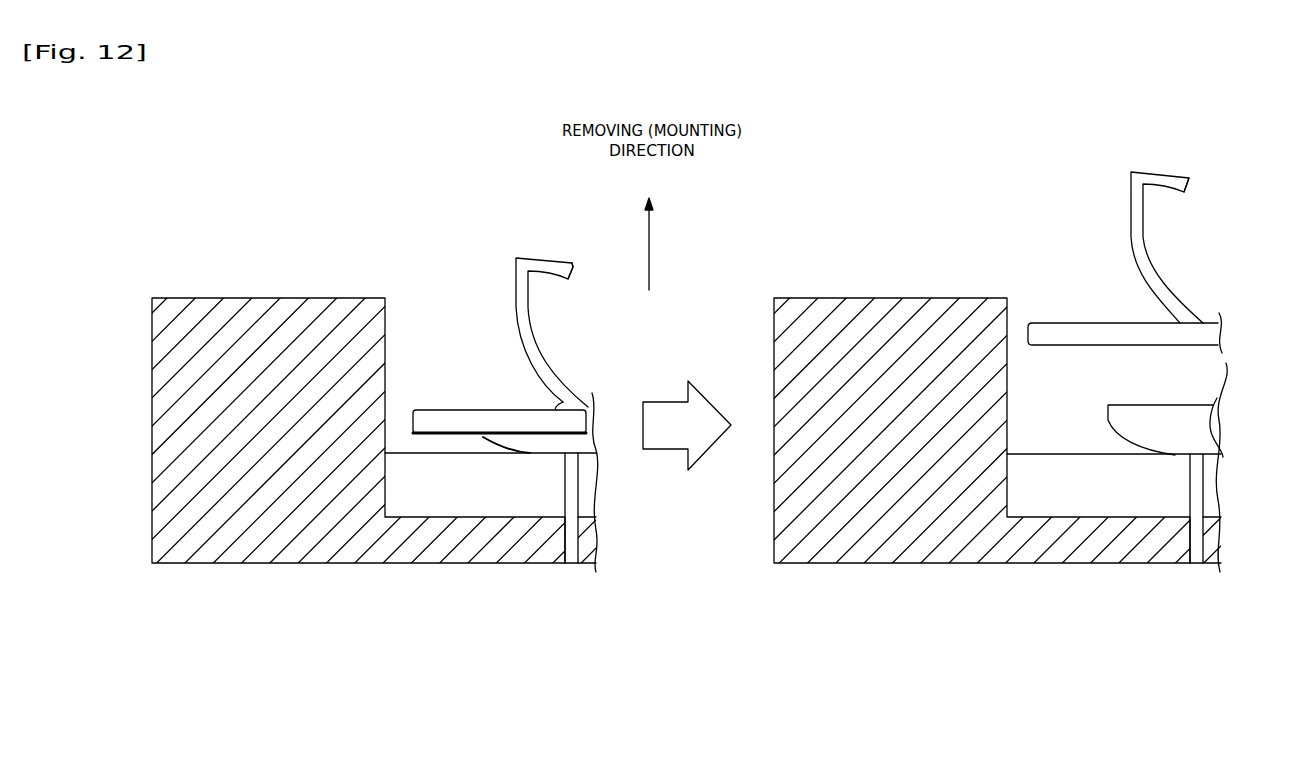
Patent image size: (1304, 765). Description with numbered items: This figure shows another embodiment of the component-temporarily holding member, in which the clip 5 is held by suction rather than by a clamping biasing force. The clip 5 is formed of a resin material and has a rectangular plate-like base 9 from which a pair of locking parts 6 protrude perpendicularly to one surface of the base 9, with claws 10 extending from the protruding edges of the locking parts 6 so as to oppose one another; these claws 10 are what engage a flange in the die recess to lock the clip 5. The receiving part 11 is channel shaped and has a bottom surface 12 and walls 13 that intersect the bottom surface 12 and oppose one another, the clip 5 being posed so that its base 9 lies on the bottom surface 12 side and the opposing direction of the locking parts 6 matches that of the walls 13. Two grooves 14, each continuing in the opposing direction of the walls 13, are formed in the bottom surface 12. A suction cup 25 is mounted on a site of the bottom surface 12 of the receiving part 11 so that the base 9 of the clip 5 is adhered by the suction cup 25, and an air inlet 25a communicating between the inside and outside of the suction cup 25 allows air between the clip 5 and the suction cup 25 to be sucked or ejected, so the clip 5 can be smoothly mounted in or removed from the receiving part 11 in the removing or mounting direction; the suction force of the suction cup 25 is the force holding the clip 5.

The clip 5 is at (497, 240).
The locking part 6 is at (522, 257).
The base 9 is at (480, 410).
The claw 10 is at (575, 260).
The receiving part 11 is at (425, 212).
The bottom surface 12 is at (465, 453).
The wall 13 is at (293, 298).
The groove 14 is at (522, 517).
The suction cup 25 is at (548, 430).
The air inlet 25a is at (567, 563).